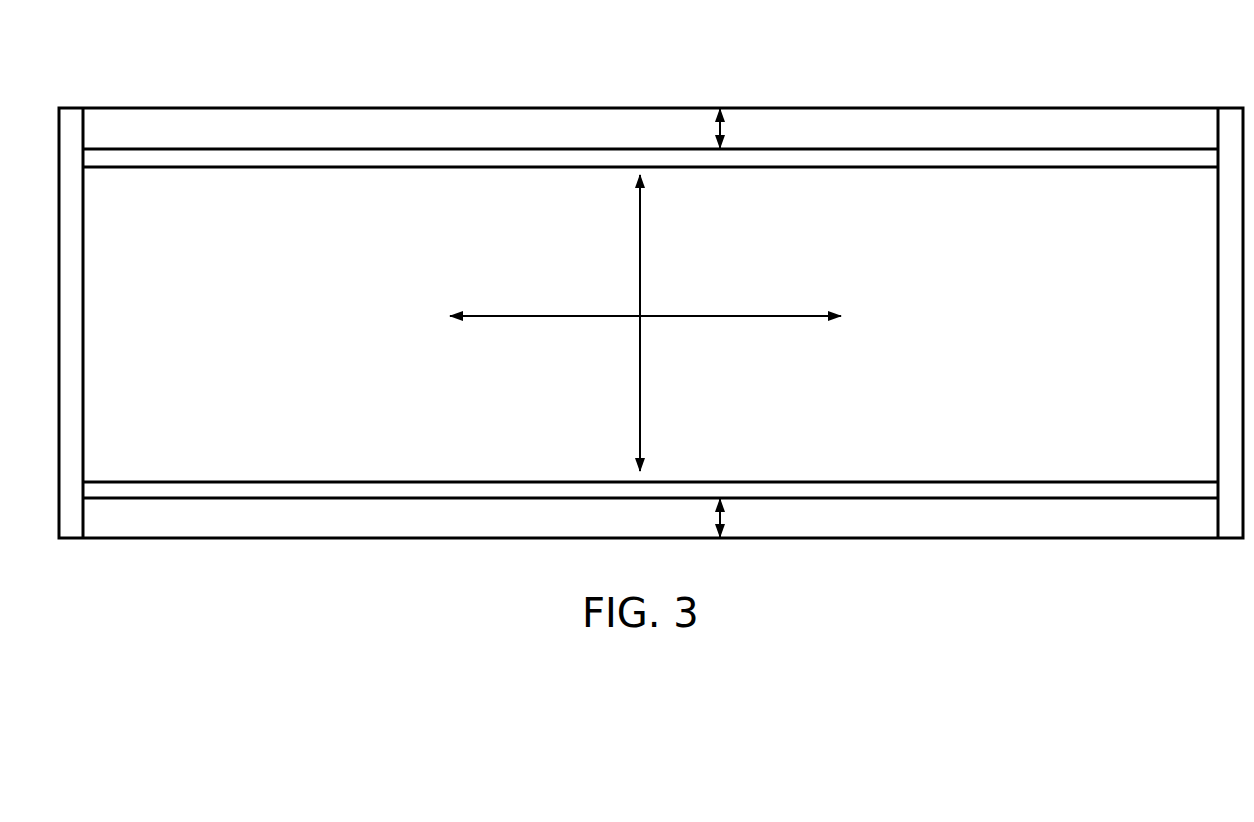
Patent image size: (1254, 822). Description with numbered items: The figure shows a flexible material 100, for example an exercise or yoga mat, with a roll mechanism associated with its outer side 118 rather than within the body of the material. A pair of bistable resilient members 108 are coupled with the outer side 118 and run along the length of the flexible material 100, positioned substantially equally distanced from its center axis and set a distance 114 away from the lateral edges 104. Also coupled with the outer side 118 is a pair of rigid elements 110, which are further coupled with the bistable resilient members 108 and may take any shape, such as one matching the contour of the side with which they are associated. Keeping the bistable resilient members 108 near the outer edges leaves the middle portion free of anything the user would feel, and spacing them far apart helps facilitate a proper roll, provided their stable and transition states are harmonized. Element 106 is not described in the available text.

The flexible material 100 is at (1037, 58).
The lateral edges 104 is at (652, 107).
The left side member 106 is at (71, 104).
The bistable resilient members 108 is at (977, 170).
The rigid elements 110 is at (1214, 344).
The distance 114 is at (725, 128).
The outer side 118 is at (498, 323).